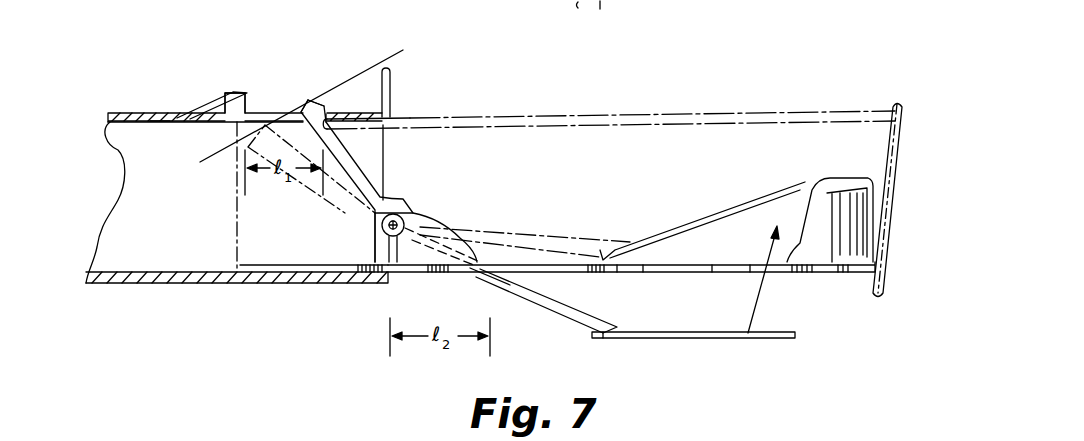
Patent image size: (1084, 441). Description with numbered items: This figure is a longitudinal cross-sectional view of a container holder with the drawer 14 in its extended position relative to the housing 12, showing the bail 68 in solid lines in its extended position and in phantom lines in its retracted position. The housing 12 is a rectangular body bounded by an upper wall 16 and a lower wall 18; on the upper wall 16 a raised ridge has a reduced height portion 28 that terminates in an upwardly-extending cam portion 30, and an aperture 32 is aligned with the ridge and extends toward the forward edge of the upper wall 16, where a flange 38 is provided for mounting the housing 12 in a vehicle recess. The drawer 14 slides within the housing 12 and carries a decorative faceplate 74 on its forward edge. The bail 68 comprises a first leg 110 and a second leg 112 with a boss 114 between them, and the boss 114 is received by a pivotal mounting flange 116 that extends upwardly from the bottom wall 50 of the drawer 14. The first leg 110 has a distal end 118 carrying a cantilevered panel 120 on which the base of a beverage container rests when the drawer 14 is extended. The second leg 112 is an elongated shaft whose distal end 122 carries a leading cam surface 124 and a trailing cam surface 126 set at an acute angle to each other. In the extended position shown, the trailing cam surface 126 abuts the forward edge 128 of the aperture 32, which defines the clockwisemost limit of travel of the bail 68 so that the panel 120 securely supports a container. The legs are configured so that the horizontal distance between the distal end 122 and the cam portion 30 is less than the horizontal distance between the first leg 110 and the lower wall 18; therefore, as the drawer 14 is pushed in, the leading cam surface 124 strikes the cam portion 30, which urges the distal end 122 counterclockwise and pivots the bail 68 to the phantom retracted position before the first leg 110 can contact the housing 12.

The housing 12 is at (145, 110).
The drawer 14 is at (643, 180).
The upper wall 16 is at (140, 112).
The lower wall 18 is at (230, 284).
The reduced height portion 28 is at (162, 115).
The cam portion 30 is at (220, 100).
The aperture 32 is at (233, 108).
The flange 38 is at (392, 88).
The bottom wall 50 is at (413, 280).
The bail 68 is at (504, 290).
The decorative faceplate 74 is at (908, 140).
The first leg 110 is at (556, 307).
The second leg 112 is at (360, 172).
The boss 114 is at (408, 213).
The pivotal mounting flange 116 is at (380, 234).
The distal end 118 is at (613, 326).
The cantilevered panel 120 is at (680, 333).
The distal end 122 is at (320, 101).
The leading cam surface 124 is at (306, 98).
The trailing cam surface 126 is at (340, 110).
The forward edge 128 is at (200, 162).